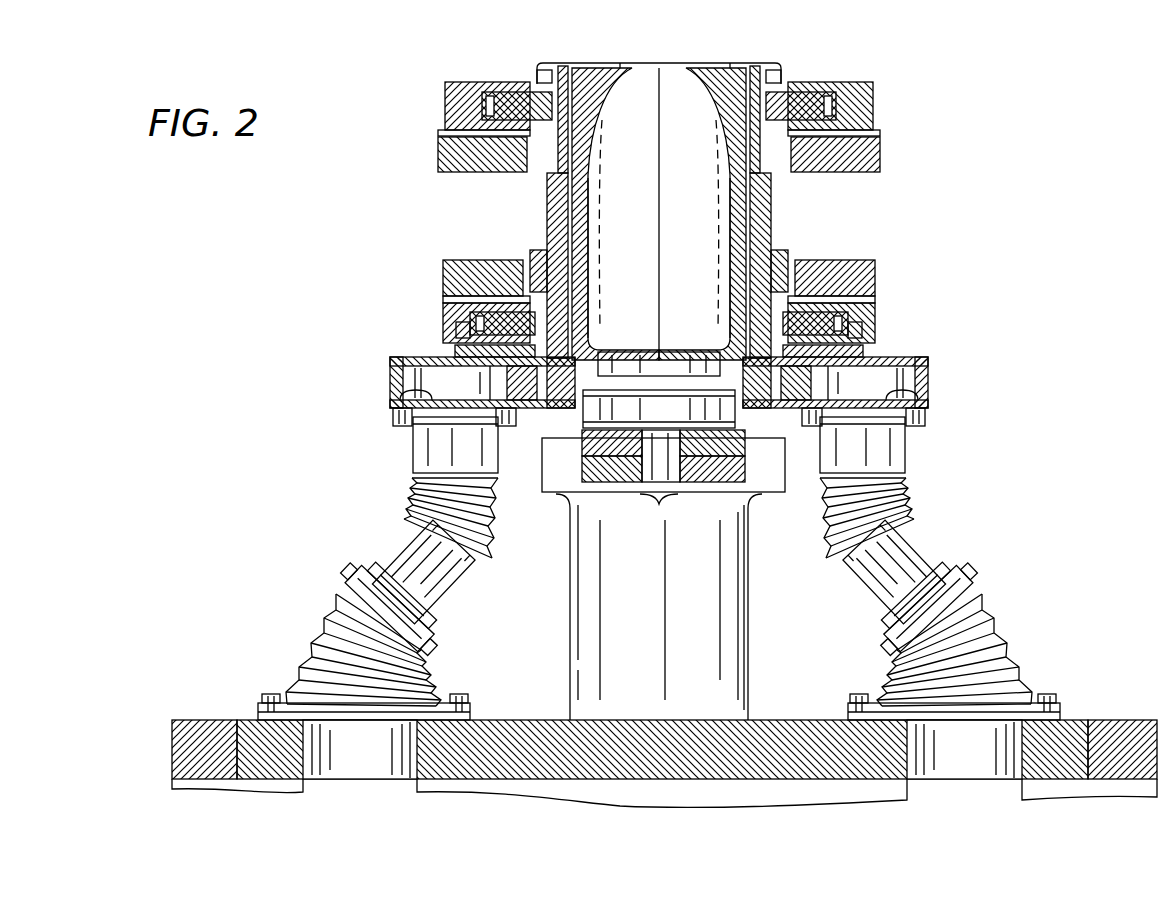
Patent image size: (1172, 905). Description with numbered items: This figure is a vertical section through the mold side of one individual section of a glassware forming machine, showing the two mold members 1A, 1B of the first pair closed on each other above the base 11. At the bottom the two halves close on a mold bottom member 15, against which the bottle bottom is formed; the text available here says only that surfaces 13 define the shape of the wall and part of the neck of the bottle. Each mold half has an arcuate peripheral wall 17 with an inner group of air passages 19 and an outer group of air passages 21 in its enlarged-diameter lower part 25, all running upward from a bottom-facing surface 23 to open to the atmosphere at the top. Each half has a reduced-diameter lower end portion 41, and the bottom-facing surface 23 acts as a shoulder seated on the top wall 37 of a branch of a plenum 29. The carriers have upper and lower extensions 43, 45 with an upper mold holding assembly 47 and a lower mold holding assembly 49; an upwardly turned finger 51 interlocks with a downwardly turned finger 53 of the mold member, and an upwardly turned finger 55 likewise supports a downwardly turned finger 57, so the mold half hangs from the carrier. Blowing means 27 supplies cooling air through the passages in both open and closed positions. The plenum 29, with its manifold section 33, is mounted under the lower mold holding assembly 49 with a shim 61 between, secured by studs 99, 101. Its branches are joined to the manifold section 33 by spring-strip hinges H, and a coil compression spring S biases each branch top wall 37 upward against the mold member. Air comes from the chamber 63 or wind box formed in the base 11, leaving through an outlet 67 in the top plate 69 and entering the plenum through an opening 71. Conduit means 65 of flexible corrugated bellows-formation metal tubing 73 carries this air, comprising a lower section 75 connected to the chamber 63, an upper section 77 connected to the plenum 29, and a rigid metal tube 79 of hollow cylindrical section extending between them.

The base 11 is at (166, 803).
The crucible tube 13 is at (734, 120).
The mold bottom member 15 is at (630, 346).
The arcuate peripheral wall 17 is at (744, 200).
The air passages 19 is at (750, 240).
The air passages 21 is at (770, 200).
The bottom-facing surface 23 is at (765, 446).
The enlarged-diameter lower part 25 is at (772, 242).
The blowing means 27 is at (306, 451).
The plenum 29 is at (392, 358).
The manifold section 33 is at (392, 380).
The top wall 37 is at (446, 312).
The reduced-diameter lower end portion 41 is at (758, 494).
The upper extension 43 is at (438, 153).
The lower extension 45 is at (446, 280).
The upper mold holding assembly 47 is at (506, 76).
The lower mold holding assembly 49 is at (436, 299).
The upwardly turned finger 51 is at (546, 125).
The downwardly turned finger 53 is at (540, 78).
The upwardly turned finger 55 is at (538, 252).
The downwardly turned finger 57 is at (470, 262).
The shim 61 is at (456, 350).
The chamber 63 is at (662, 769).
The conduit means 65 is at (376, 528).
The outlet 67 is at (320, 758).
The top plate 69 is at (700, 790).
The opening 71 is at (396, 402).
The flexible corrugated bellows-formation metal tubing 73 is at (370, 554).
The lower section 75 is at (432, 662).
The upper section 77 is at (486, 532).
The rigid metal tube 79 is at (448, 578).
The stud 99 is at (890, 312).
The stud 101 is at (455, 333).
The mold member 1A is at (610, 66).
The mold member 1B is at (722, 66).
The hinges H is at (488, 378).
The coil compression spring S is at (600, 402).